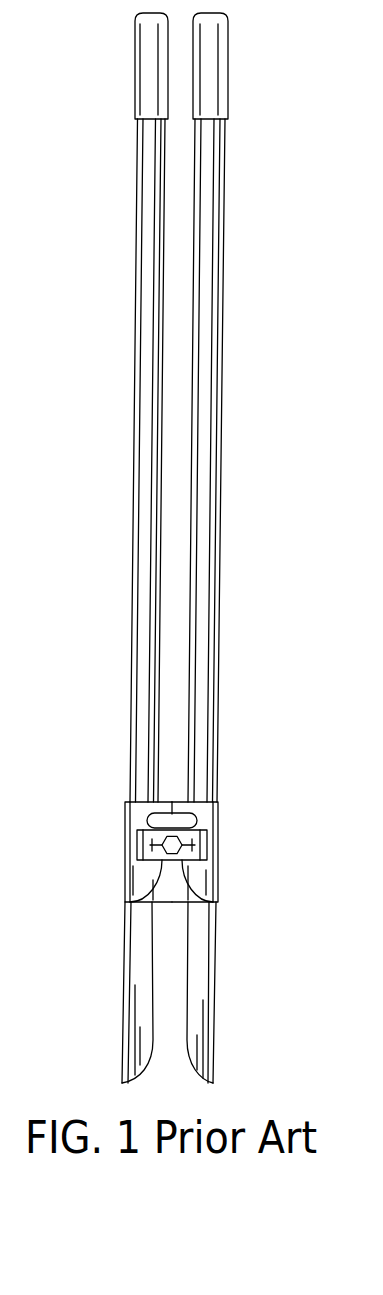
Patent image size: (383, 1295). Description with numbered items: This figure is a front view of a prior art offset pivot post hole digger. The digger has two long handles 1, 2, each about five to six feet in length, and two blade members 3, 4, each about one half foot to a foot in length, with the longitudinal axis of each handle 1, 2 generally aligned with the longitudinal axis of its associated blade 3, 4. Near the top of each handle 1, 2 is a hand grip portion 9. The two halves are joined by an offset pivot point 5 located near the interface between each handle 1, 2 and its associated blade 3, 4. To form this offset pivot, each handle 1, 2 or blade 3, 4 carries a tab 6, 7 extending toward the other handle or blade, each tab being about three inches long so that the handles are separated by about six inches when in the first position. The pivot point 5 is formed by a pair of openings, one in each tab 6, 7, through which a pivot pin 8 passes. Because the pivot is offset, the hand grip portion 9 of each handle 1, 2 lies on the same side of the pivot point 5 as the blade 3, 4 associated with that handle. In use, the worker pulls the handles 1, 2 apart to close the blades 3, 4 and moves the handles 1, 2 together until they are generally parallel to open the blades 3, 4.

The handle 1 is at (135, 343).
The handle 2 is at (222, 325).
The blade member 3 is at (122, 1000).
The blade member 4 is at (214, 998).
The offset pivot point 5 is at (192, 847).
The tab 6 is at (125, 815).
The tab 7 is at (218, 818).
The pivot pin 8 is at (135, 848).
The hand grip portion 9 is at (137, 90).